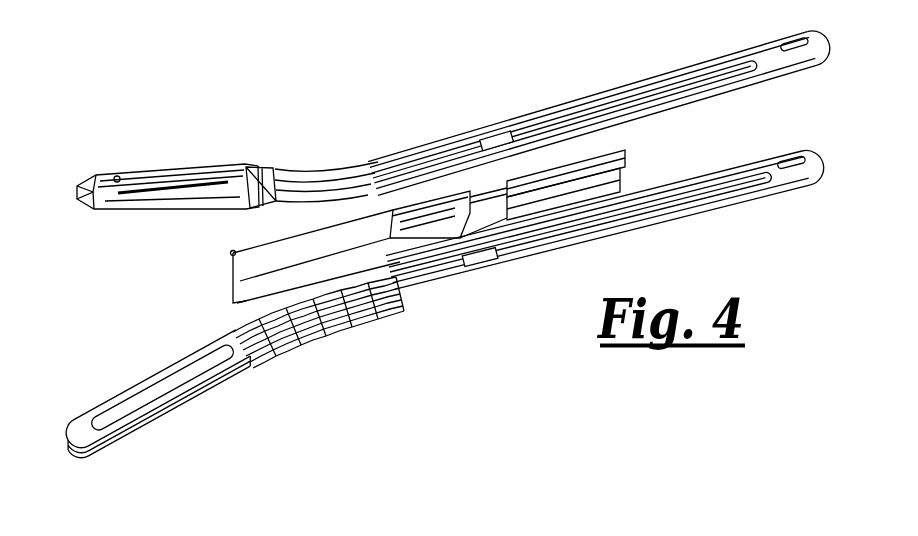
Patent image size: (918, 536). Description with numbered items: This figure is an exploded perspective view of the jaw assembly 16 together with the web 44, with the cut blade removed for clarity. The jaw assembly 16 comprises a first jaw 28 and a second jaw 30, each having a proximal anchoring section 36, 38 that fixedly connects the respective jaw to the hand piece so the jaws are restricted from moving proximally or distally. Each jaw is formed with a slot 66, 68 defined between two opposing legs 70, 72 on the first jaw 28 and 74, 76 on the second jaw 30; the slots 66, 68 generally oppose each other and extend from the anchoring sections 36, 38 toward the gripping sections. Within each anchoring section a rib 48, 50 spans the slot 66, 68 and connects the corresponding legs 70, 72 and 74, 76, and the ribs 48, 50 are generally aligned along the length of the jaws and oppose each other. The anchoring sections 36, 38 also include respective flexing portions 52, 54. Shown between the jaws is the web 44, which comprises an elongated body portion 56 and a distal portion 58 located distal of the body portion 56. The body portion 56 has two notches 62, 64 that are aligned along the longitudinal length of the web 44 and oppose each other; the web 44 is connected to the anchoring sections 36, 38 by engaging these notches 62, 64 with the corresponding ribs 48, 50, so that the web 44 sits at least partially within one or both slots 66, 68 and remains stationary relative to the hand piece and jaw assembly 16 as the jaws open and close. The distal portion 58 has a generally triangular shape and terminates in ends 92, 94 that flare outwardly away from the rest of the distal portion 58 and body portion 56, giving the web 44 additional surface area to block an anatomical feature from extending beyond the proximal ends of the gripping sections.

The jaw assembly 16 is at (183, 143).
The first jaw 28 is at (344, 142).
The second jaw 30 is at (318, 349).
The anchoring section 36 is at (601, 99).
The anchoring section 38 is at (612, 232).
The web 44 is at (255, 283).
The rib 48 is at (494, 138).
The rib 50 is at (481, 268).
The flexing portion 52 is at (272, 173).
The flexing portion 54 is at (254, 370).
The body portion 56 is at (627, 152).
The distal portion 58 is at (270, 272).
The notch 62 is at (471, 194).
The notch 64 is at (513, 232).
The slot 66 is at (587, 108).
The slot 68 is at (716, 190).
The leg 70 is at (660, 82).
The leg 72 is at (745, 86).
The leg 74 is at (718, 178).
The leg 76 is at (663, 222).
The flared end 92 is at (230, 253).
The flared end 94 is at (233, 306).